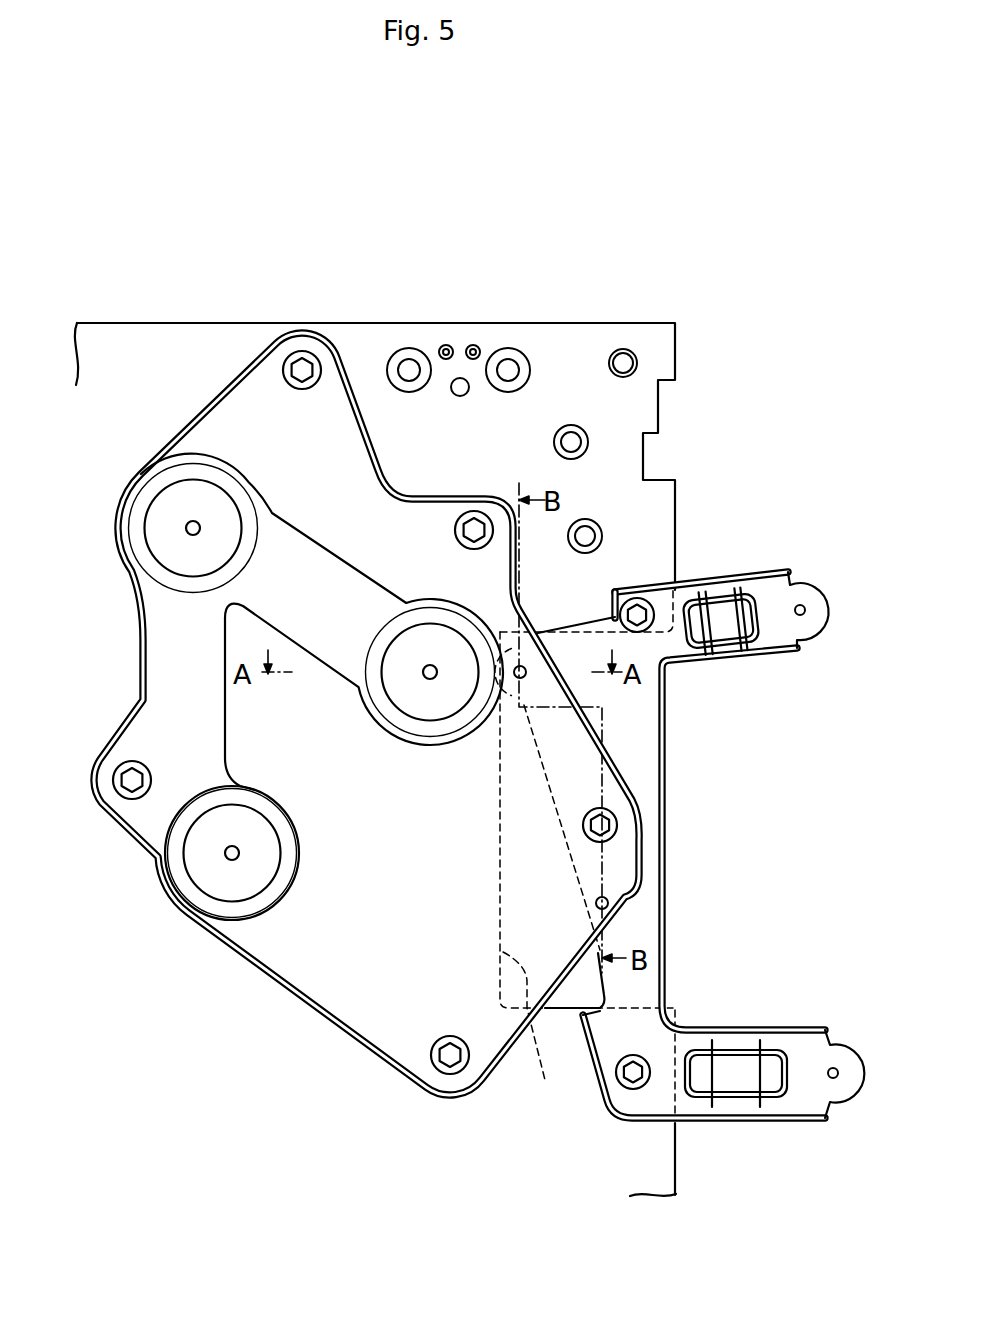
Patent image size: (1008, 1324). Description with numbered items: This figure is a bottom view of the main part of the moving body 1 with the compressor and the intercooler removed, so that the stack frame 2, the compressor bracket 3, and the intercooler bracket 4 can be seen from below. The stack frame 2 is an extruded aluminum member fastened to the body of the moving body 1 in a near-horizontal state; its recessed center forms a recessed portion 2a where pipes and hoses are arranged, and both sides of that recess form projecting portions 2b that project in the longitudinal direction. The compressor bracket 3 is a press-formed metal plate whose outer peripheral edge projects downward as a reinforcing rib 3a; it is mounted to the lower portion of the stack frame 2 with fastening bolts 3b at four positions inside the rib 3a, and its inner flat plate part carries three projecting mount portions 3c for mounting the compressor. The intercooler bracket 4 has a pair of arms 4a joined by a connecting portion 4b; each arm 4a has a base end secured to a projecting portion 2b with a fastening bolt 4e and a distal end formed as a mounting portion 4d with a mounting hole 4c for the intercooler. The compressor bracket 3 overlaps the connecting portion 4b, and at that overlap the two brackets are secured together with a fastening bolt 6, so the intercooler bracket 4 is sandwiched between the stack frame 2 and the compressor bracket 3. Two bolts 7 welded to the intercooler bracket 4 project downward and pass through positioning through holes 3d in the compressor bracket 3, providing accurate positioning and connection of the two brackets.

The moving body 1 is at (115, 181).
The stack frame 2 is at (568, 330).
The recessed portion 2a is at (584, 855).
The projecting portion 2b is at (655, 356).
The compressor bracket 3 is at (345, 992).
The rib 3a is at (258, 985).
The fastening bolt 3b is at (300, 366).
The projecting mount portion 3c is at (150, 490).
The positioning through hole 3d is at (561, 787).
The intercooler bracket 4 is at (672, 731).
The arm 4a is at (746, 600).
The connecting portion 4b is at (648, 766).
The mounting hole 4c is at (805, 618).
The mounting portion 4d is at (803, 598).
The fastening bolt 4e is at (648, 612).
The fastening bolt 6 is at (617, 830).
The bolt 7 is at (522, 679).